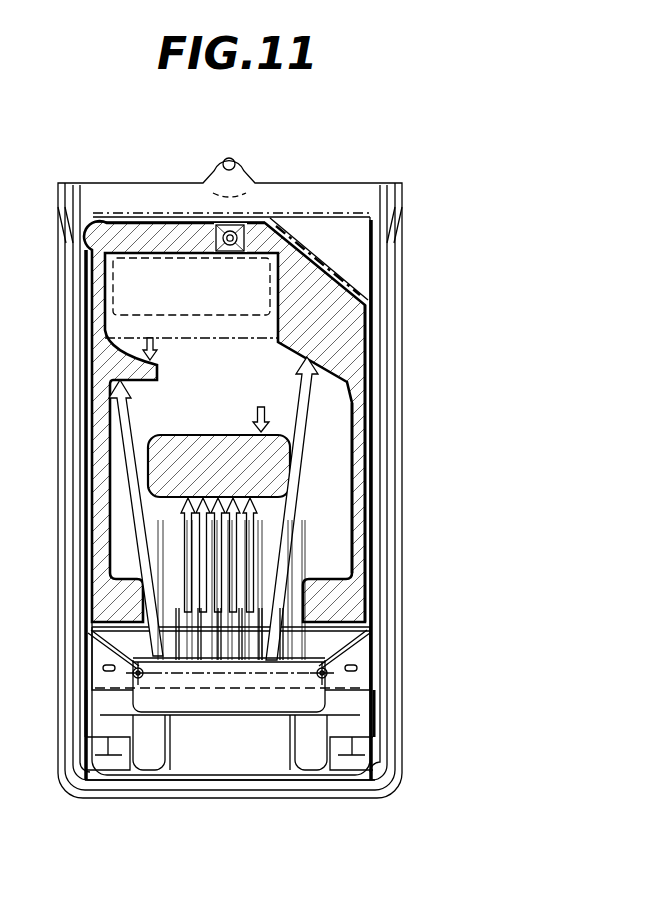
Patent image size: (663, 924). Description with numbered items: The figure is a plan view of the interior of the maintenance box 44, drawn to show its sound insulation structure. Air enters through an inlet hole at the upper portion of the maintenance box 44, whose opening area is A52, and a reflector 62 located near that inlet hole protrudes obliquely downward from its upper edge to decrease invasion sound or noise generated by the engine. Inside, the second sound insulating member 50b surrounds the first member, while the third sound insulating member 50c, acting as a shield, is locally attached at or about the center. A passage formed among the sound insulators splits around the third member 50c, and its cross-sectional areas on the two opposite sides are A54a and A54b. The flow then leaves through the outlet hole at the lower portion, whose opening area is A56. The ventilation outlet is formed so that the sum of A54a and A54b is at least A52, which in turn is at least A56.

The maintenance box 44 is at (413, 187).
The reflector 62 is at (205, 300).
The opening area of the inlet hole A52 is at (163, 345).
The third sound insulating member 50c is at (253, 428).
The cross-sectional area of the passage on one side of the third member A54a is at (140, 463).
The second sound insulating member 50b is at (357, 407).
The cross-sectional area of the passage on the other side of the third member A54b is at (317, 470).
The opening area of the outlet hole A56 is at (147, 655).